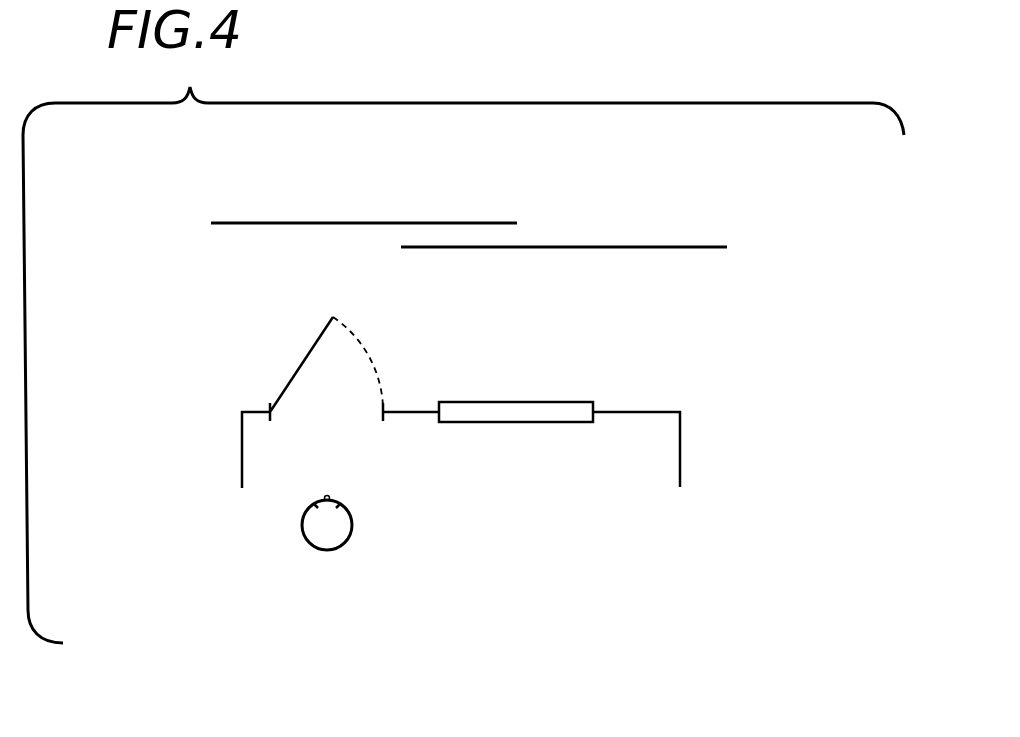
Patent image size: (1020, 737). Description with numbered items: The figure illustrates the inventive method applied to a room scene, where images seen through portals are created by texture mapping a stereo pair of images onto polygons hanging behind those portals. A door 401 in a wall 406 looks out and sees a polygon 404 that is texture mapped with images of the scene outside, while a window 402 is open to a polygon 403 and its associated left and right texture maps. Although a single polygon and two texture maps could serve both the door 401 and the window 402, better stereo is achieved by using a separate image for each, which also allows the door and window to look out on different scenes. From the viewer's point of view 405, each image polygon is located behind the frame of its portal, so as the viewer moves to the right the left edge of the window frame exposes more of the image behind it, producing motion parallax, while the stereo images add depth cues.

The door 401 is at (287, 383).
The window 402 is at (548, 400).
The polygon 403 is at (662, 247).
The polygon 404 is at (262, 223).
The viewer's point of view 405 is at (325, 550).
The wall 406 is at (637, 413).